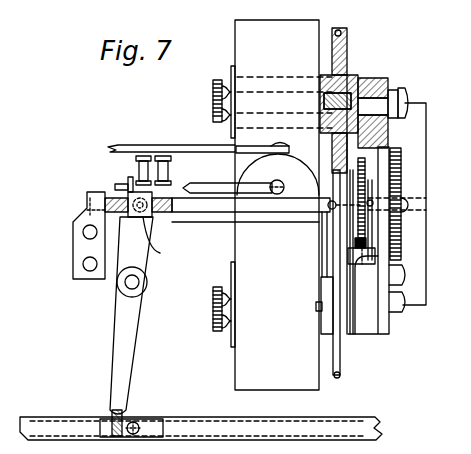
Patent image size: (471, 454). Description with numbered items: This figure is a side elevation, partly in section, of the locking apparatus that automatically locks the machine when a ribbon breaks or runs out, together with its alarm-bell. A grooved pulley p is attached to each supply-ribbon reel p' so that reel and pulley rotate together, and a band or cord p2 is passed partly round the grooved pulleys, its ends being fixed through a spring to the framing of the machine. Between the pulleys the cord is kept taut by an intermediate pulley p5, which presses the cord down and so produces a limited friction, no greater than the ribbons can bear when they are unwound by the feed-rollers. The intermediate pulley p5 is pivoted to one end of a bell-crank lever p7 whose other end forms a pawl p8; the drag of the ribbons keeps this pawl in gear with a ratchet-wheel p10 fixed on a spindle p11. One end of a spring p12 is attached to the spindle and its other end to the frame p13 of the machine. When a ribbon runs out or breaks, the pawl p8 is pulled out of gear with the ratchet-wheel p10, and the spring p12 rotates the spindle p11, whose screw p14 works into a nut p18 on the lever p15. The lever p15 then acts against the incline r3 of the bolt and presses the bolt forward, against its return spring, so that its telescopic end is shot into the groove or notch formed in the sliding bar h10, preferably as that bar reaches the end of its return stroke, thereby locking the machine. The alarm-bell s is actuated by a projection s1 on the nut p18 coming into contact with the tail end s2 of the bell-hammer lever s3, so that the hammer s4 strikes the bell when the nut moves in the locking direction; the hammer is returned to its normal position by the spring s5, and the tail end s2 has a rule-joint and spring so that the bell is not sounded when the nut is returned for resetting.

The grooved pulley p is at (343, 201).
The supply-ribbon reel p' is at (284, 205).
The band or cord p2 is at (341, 33).
The intermediate pulley p5 is at (340, 213).
The bell-crank lever p7 is at (350, 222).
The pawl p8 is at (356, 268).
The ratchet-wheel p10 is at (366, 150).
The spindle p11 is at (224, 214).
The spring p12 is at (397, 178).
The frame p13 is at (384, 80).
The screw p14 is at (118, 222).
The lever p15 is at (133, 303).
The nut p18 is at (164, 240).
The alarm-bell s is at (277, 169).
The projection s1 is at (128, 179).
The tail end s2 is at (116, 187).
The bell-hammer lever s3 is at (172, 184).
The hammer s4 is at (272, 184).
The spring s5 is at (150, 178).
The incline r3 is at (150, 428).
The sliding bar h10 is at (201, 431).